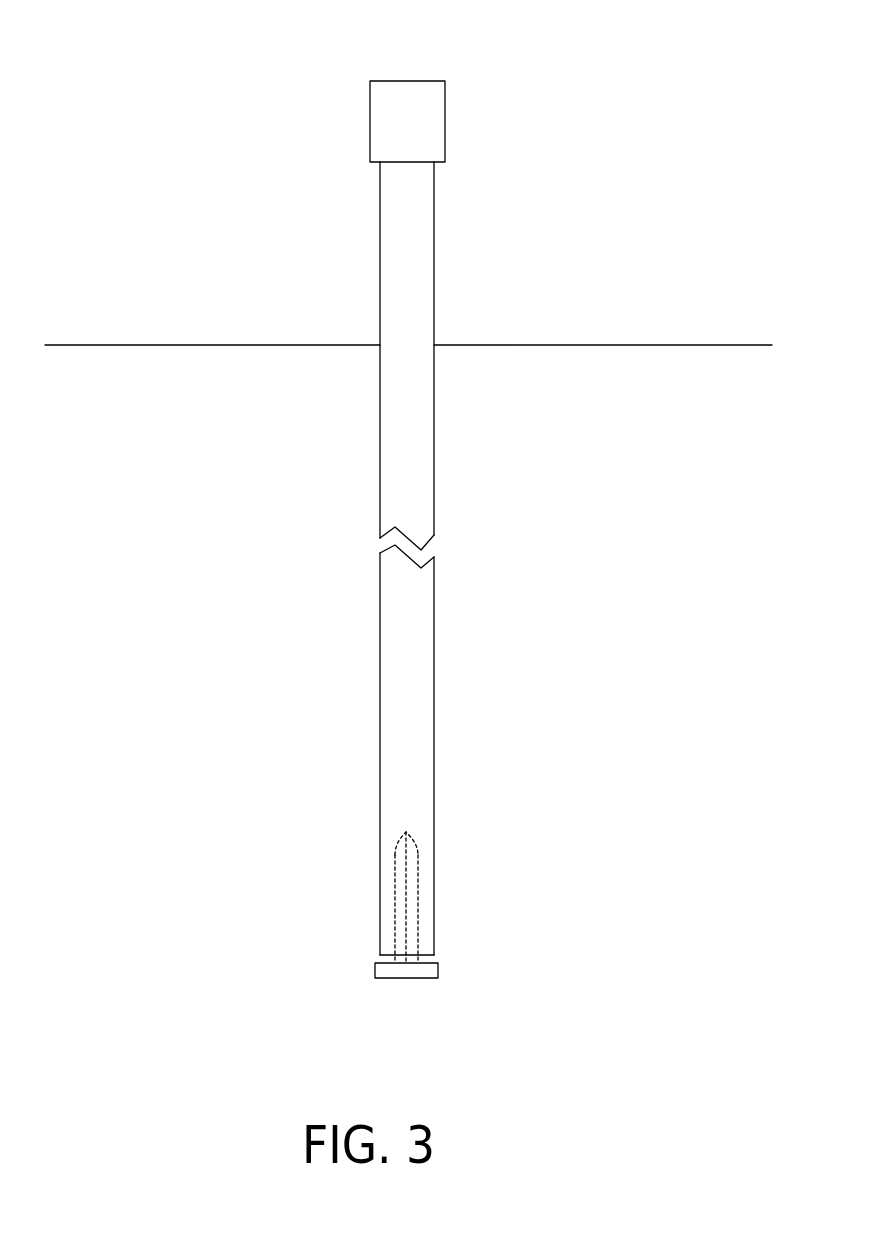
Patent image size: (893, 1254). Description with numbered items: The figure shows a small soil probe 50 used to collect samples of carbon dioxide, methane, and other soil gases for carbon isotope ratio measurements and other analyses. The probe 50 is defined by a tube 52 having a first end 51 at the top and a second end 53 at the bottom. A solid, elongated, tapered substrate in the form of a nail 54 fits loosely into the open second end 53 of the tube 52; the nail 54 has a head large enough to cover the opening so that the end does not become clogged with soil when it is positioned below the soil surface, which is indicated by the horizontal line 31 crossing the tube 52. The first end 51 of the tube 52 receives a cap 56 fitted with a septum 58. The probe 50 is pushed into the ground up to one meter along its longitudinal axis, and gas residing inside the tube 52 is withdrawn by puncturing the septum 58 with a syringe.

The ground surface 31 is at (692, 345).
The soil probe 50 is at (602, 735).
The first end 51 is at (387, 117).
The tube 52 is at (380, 268).
The second end 53 is at (432, 886).
The nail 54 is at (403, 980).
The cap 56 is at (445, 116).
The septum 58 is at (399, 81).